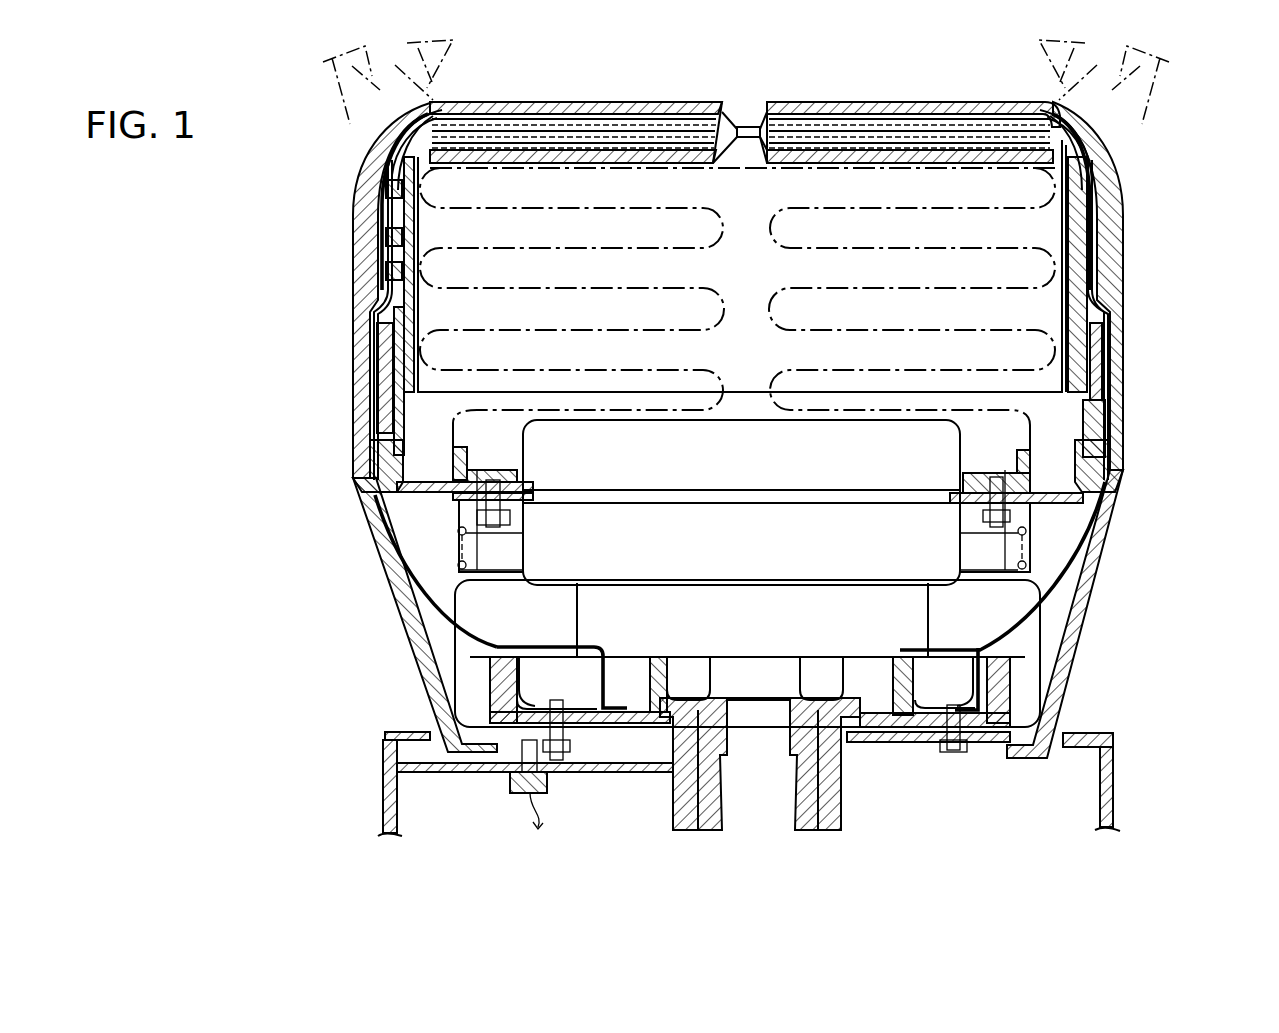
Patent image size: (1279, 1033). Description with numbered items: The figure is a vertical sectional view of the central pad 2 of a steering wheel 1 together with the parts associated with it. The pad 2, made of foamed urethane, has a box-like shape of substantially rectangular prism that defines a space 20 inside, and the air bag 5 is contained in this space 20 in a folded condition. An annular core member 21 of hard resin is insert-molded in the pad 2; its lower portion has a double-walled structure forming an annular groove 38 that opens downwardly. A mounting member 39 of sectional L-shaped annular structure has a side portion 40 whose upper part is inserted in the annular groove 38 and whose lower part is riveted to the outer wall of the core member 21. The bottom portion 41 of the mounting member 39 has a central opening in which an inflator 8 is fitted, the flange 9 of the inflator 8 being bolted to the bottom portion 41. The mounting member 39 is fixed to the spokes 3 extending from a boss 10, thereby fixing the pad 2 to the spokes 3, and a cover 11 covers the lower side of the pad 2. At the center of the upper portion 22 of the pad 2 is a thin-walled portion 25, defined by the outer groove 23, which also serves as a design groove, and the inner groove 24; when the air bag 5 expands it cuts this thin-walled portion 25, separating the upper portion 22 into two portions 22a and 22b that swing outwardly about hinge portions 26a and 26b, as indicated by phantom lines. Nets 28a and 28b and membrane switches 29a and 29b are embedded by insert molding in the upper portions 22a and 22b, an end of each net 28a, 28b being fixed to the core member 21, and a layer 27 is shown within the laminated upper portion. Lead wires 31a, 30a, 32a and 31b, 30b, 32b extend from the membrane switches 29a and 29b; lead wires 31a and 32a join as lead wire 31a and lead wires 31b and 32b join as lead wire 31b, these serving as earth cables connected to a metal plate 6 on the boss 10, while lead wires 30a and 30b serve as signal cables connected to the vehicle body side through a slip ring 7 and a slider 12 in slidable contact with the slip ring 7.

The steering wheel 1 is at (1222, 129).
The pad 2 is at (1112, 209).
The spokes 3 is at (1040, 643).
The air bag 5 is at (597, 205).
The metal plate 6 is at (637, 707).
The slip ring 7 is at (583, 753).
The inflator 8 is at (766, 580).
The flange 9 is at (455, 497).
The boss 10 is at (843, 800).
The cover 11 is at (397, 603).
The slider 12 is at (518, 757).
The space 20 is at (451, 243).
The core member 21 is at (388, 212).
The upper portion 22 is at (832, 104).
The upper portion 22a is at (360, 84).
The upper portion 22b is at (950, 108).
The outer groove 23 is at (758, 128).
The inner groove 24 is at (755, 160).
The thin-walled portion 25 is at (745, 127).
The hinge portion 26a is at (372, 119).
The hinge portion 26b is at (1098, 122).
The core layer 27 is at (617, 131).
The net 28a is at (538, 170).
The net 28b is at (913, 170).
The membrane switch 29a is at (548, 118).
The membrane switch 29b is at (882, 118).
The lead wire 30a is at (382, 150).
The lead wire 30b is at (1105, 157).
The lead wire 31a is at (434, 112).
The lead wire 31b is at (1062, 120).
The lead wire 32a is at (436, 118).
The lead wire 32b is at (1066, 125).
The annular groove 38 is at (383, 360).
The mounting member 39 is at (380, 492).
The side portion 40 is at (395, 392).
The bottom portion 41 is at (398, 510).